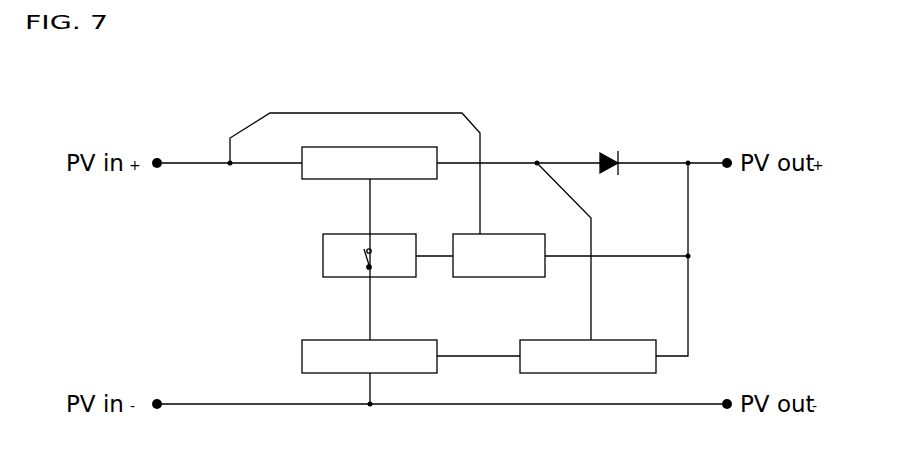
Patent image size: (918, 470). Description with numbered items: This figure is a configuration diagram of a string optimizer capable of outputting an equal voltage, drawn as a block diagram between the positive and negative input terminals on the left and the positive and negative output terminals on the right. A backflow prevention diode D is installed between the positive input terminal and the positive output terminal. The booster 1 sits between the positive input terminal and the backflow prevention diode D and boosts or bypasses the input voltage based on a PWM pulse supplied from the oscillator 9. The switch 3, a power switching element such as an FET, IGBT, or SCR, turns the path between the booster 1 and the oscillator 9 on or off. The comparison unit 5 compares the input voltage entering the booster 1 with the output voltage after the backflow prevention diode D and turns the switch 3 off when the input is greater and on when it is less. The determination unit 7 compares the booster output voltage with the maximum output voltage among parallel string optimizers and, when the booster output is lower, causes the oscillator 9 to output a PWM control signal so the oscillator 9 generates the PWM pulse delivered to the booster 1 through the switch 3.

The booster 1 is at (327, 175).
The switch 3 is at (347, 268).
The comparison unit 5 is at (477, 268).
The determination unit 7 is at (545, 372).
The oscillator 9 is at (326, 372).
The backflow prevention diode D is at (608, 149).